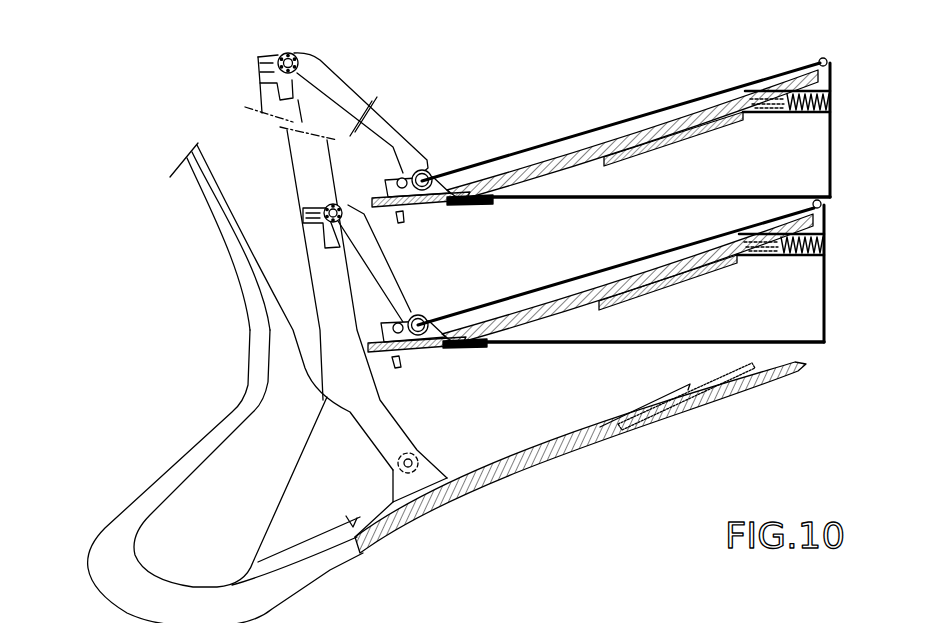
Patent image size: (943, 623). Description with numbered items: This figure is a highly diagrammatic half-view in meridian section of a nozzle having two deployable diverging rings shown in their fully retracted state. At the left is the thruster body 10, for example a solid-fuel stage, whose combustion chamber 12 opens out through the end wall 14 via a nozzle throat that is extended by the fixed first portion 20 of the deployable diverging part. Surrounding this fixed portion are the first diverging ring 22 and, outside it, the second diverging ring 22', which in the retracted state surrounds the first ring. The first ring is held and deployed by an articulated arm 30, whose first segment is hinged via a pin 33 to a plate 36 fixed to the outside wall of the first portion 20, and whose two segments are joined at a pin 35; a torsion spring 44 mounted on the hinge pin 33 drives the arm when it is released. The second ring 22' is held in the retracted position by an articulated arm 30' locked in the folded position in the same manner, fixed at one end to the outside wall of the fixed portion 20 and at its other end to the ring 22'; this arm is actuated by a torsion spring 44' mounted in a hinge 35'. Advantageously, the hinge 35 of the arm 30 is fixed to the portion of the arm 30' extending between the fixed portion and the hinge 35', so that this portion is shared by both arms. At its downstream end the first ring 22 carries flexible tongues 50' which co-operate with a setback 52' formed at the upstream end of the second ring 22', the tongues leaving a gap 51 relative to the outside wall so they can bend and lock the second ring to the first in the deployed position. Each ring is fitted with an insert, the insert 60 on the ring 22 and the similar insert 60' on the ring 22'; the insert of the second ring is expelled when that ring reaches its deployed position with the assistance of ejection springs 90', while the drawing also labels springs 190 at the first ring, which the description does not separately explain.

The thruster body 10 is at (236, 205).
The combustion chamber 12 is at (182, 292).
The end wall 14 is at (206, 413).
The first portion of deployable diverging part 20 is at (603, 440).
The first diverging ring 22 is at (627, 279).
The second diverging ring 22' is at (621, 131).
The arm 30 is at (406, 263).
The arm 30' is at (376, 115).
The pin 33 is at (410, 456).
The pin 35 is at (347, 197).
The hinge 35' is at (314, 43).
The plate 36 is at (398, 481).
The torsion spring 44 is at (346, 280).
The torsion spring 44' is at (276, 55).
The flexible tongues 50' is at (591, 286).
The gap 51 is at (816, 199).
The setback 52' is at (432, 209).
The insert 60 is at (673, 288).
The insert 60' is at (683, 147).
The ejection springs 90' is at (812, 104).
The lower spring 190 is at (826, 258).